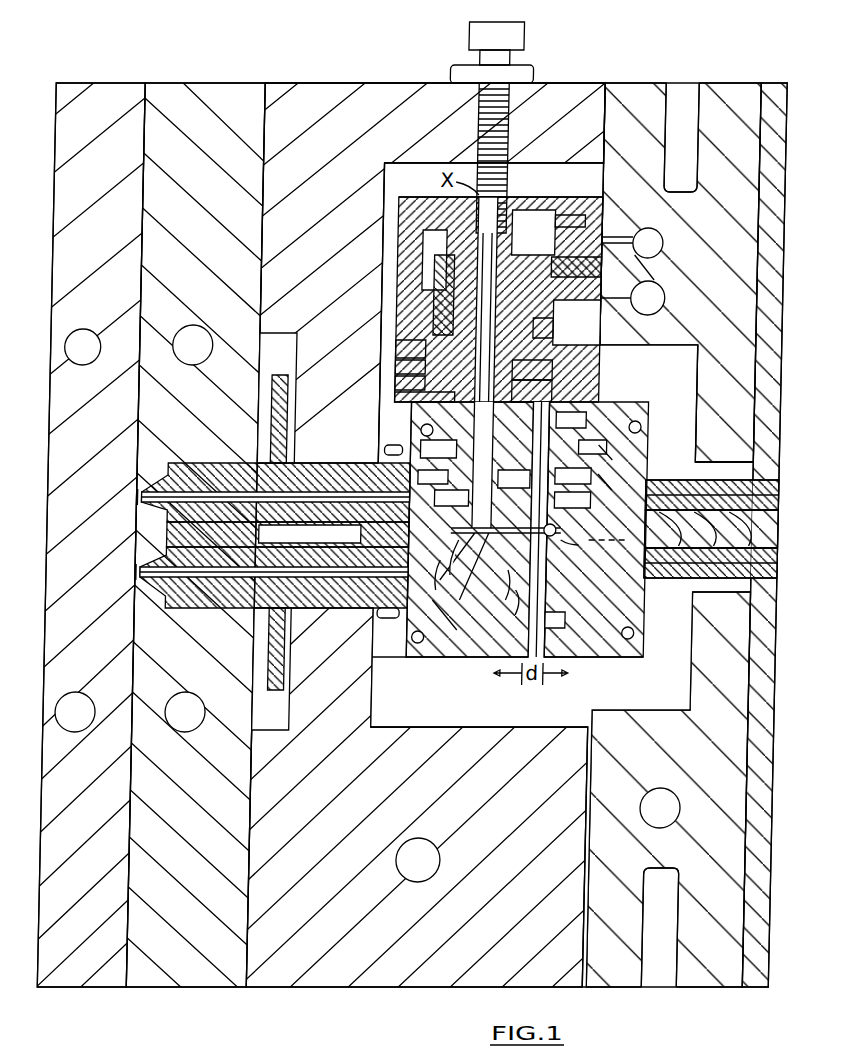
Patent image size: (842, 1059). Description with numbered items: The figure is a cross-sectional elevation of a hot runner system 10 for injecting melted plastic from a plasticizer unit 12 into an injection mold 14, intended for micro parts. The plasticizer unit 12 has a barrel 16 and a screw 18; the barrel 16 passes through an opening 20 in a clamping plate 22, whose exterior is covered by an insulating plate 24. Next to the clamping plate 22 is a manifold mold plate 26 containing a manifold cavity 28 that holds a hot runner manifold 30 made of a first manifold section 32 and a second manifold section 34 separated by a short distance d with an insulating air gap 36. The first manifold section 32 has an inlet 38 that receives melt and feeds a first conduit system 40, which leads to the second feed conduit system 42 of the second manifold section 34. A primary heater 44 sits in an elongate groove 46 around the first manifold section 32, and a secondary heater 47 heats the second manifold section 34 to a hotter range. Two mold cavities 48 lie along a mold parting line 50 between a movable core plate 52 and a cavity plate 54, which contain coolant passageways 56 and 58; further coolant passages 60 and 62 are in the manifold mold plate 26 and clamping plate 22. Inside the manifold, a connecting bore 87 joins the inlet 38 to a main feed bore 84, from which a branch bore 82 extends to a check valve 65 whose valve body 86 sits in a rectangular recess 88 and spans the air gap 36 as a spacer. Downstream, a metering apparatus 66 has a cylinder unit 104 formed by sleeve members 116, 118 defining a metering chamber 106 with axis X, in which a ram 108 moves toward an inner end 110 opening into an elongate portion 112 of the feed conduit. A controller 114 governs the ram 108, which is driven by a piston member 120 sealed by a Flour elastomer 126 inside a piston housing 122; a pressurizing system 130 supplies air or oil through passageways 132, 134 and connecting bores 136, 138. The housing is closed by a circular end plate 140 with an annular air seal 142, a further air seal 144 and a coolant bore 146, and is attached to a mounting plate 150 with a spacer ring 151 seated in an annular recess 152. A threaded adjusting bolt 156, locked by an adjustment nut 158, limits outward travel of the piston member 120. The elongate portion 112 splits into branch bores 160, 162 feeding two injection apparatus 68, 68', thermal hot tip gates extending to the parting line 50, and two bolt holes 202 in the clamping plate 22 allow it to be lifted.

The hot runner system 10 is at (492, 660).
The plasticizer unit 12 is at (730, 580).
The injection mold 14 is at (92, 988).
The barrel 16 is at (672, 480).
The screw 18 is at (693, 578).
The opening 20 is at (712, 425).
The clamping plate 22 is at (733, 261).
The insulating plate 24 is at (780, 83).
The manifold mold plate 26 is at (315, 223).
The manifold cavity 28 is at (410, 733).
The hot runner manifold 30 is at (432, 660).
The first manifold section 32 is at (590, 458).
The second manifold section 34 is at (468, 660).
The insulating air gap 36 is at (564, 620).
The inlet 38 is at (619, 482).
The first conduit system 40 is at (583, 555).
The second feed conduit system 42 is at (449, 615).
The primary heater 44 is at (646, 420).
The elongate groove 46 is at (619, 455).
The secondary heater 47 is at (389, 655).
The mold cavities 48 is at (146, 497).
The mold parting line 50 is at (150, 880).
The movable core plate 52 is at (87, 903).
The cavity plate 54 is at (209, 774).
The coolant passageways 56 is at (100, 362).
The coolant passageways 58 is at (214, 352).
The coolant passage 60 is at (420, 853).
The coolant passage 62 is at (667, 792).
The check valve 65 is at (556, 540).
The metering apparatus 66 is at (433, 478).
The injection apparatus 68 is at (276, 492).
The injection apparatus 68' is at (274, 589).
The branch bore 82 is at (514, 480).
The main feed bore 84 is at (612, 550).
The valve body 86 is at (505, 605).
The connecting bore 87 is at (626, 524).
The rectangular recess 88 is at (496, 585).
The cylinder unit 104 is at (403, 400).
The metering chamber 106 is at (575, 500).
The ram 108 is at (438, 454).
The inner end 110 is at (474, 557).
The elongate portion 112 is at (457, 583).
The controller 114 is at (640, 234).
The sleeve member 116 is at (615, 490).
The sleeve member 118 is at (578, 422).
The piston member 120 is at (403, 262).
The piston housing 122 is at (668, 243).
The Flour elastomer 126 is at (438, 292).
The pressurizing system 130 is at (680, 272).
The passageway 132 is at (664, 256).
The passageway 134 is at (671, 304).
The connecting bore 136 is at (600, 326).
The connecting bore 138 is at (607, 266).
The circular end plate 140 is at (520, 215).
The annular air seal 142 is at (600, 228).
The further air seal 144 is at (590, 350).
The bore 146 is at (590, 374).
The mounting plate 150 is at (403, 386).
The spacer ring 151 is at (403, 349).
The annular recess 152 is at (403, 368).
The threaded adjusting bolt 156 is at (526, 54).
The adjustment nut 158 is at (536, 76).
The branch bore 160 is at (449, 498).
The branch bore 162 is at (437, 636).
The bolt holes 202 is at (701, 154).